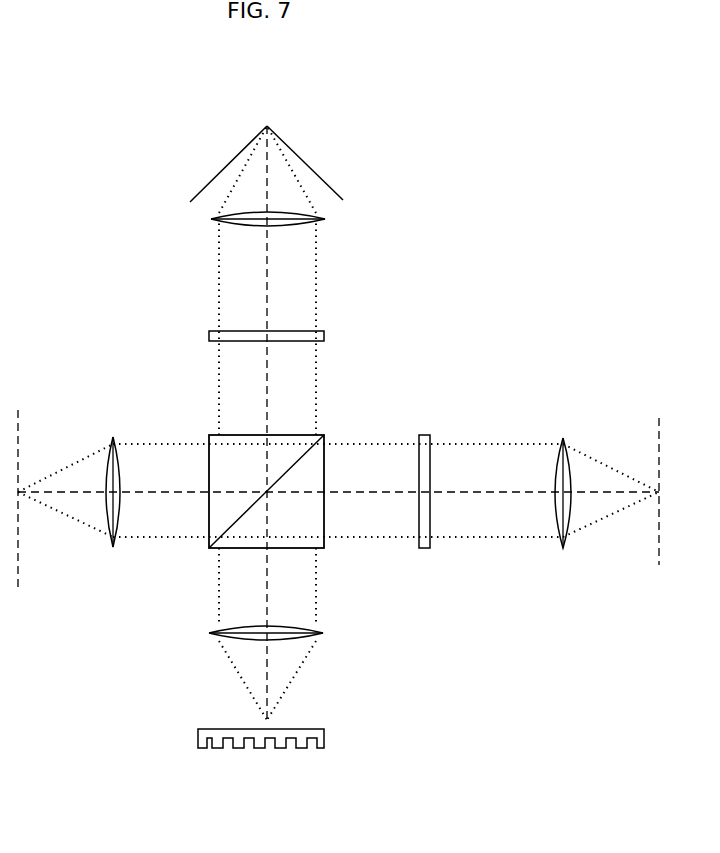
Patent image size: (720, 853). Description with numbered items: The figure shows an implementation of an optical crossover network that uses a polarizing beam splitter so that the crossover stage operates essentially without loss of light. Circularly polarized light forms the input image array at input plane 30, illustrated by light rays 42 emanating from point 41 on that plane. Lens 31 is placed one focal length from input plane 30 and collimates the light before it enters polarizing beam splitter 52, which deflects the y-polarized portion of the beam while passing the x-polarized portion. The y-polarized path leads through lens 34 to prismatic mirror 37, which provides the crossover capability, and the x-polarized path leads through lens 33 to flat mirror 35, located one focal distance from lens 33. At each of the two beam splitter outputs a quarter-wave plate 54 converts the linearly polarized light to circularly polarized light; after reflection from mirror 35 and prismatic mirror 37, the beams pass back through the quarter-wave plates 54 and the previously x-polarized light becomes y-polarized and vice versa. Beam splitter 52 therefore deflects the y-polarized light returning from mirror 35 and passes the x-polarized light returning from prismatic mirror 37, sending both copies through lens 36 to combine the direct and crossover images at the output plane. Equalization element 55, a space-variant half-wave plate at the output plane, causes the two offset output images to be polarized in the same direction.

The input plane 30 is at (18, 445).
The lens 31 is at (113, 440).
The lens 33 is at (563, 440).
The lens 34 is at (322, 220).
The mirror 35 is at (657, 545).
The lens 36 is at (322, 633).
The prismatic mirror 37 is at (283, 142).
The point 41 is at (18, 495).
The light rays 42 is at (88, 527).
The polarizing beam splitter 52 is at (317, 513).
The quarter-wave plate 54 is at (318, 335).
The equalization element 55 is at (316, 748).